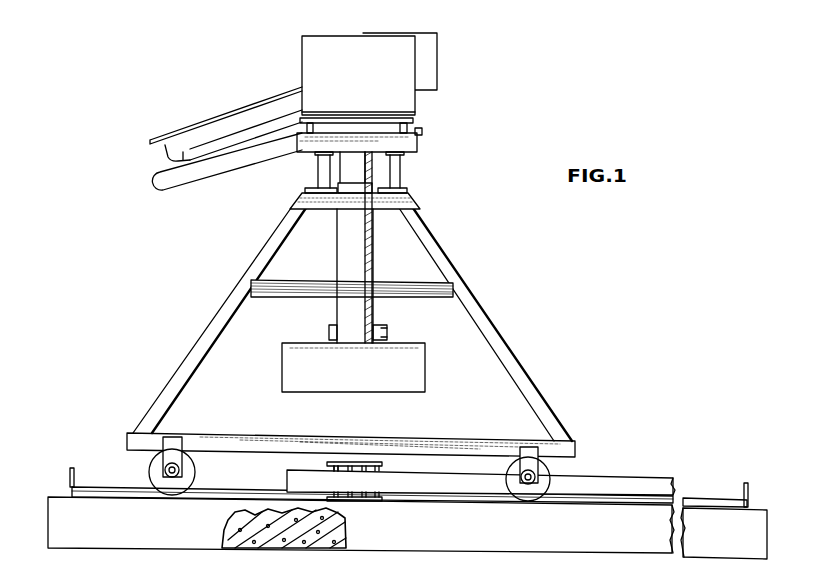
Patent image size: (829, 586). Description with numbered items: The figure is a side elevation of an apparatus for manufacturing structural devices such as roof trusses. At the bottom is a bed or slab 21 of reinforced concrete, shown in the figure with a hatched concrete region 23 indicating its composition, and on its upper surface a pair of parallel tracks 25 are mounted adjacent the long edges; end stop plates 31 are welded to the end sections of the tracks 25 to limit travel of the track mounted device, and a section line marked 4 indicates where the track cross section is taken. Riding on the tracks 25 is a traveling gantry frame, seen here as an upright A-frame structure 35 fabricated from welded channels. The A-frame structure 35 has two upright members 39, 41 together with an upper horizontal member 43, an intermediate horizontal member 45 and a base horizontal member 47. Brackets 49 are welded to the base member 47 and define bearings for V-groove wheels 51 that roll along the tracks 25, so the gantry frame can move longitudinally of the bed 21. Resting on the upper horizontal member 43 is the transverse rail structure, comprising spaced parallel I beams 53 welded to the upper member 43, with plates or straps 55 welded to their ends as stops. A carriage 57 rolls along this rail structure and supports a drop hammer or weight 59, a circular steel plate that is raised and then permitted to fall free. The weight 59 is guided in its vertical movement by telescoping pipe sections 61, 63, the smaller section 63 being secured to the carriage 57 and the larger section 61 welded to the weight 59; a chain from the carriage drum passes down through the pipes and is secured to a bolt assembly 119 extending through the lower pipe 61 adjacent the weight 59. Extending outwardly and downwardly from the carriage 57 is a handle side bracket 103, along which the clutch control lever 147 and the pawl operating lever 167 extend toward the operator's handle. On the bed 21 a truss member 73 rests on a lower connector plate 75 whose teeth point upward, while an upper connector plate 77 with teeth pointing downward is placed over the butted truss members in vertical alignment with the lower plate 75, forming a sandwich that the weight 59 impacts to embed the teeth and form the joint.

The bed or slab 21 is at (510, 536).
The concrete 23 is at (232, 514).
The tracks 25 is at (623, 503).
The end stop plates 31 is at (70, 476).
The A-frame structure 35 is at (356, 325).
The upright member 39 is at (204, 338).
The upright member 41 is at (489, 329).
The upper horizontal member 43 is at (392, 203).
The intermediate horizontal member 45 is at (287, 291).
The base horizontal member 47 is at (341, 462).
The brackets 49 is at (176, 445).
The V-groove wheels 51 is at (190, 470).
The I beams 53 is at (318, 168).
The plates or straps 55 is at (412, 143).
The carriage 57 is at (368, 81).
The drop hammer or weight 59 is at (426, 373).
The larger telescoping pipe section 61 is at (347, 264).
The smaller telescoping pipe section 63 is at (357, 163).
The truss member 73 is at (450, 478).
The lower connector plate 75 is at (364, 501).
The upper connector plate 77 is at (336, 462).
The side bracket 103 is at (220, 158).
The bolt assembly 119 is at (380, 327).
The clutch control lever 147 is at (212, 121).
The operating lever 167 is at (257, 127).
The section line 4- 4 is at (728, 472).